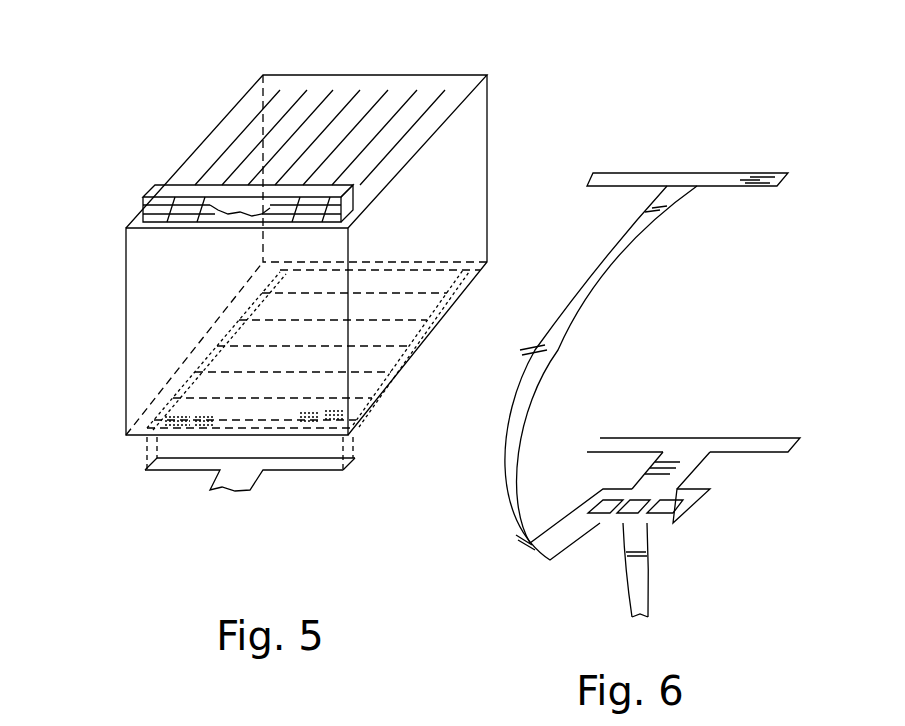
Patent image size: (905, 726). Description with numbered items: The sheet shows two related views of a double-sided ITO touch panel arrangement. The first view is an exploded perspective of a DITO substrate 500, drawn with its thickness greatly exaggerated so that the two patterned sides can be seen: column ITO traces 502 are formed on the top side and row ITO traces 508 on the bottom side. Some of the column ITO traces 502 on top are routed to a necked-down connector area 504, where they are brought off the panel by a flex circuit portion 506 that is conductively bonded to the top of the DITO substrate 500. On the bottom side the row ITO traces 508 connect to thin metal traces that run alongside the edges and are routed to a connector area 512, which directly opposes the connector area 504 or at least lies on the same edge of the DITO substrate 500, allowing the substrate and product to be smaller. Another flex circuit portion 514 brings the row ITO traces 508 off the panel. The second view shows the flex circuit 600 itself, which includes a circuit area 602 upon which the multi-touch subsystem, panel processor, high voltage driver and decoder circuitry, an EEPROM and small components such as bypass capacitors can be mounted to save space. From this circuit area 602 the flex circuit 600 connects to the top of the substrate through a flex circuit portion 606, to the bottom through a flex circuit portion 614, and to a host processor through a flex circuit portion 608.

In FIG. 5, the DITO substrate 500 is at (126, 308).
In FIG. 5, the column ITO traces 502 is at (253, 120).
In FIG. 5, the connector area 504 is at (158, 230).
In FIG. 5, the flex circuit portion 506 is at (160, 185).
In FIG. 5, the row ITO traces 508 is at (187, 350).
In FIG. 5, the connector area 512 is at (357, 420).
In FIG. 5, the flex circuit portion 514 is at (213, 487).
In FIG. 6, the flex circuit 600 is at (590, 310).
In FIG. 6, the circuit area 602 is at (687, 507).
In FIG. 6, the flex circuit portion 606 is at (685, 172).
In FIG. 6, the flex circuit portion 608 is at (650, 597).
In FIG. 6, the flex circuit portion 614 is at (720, 445).